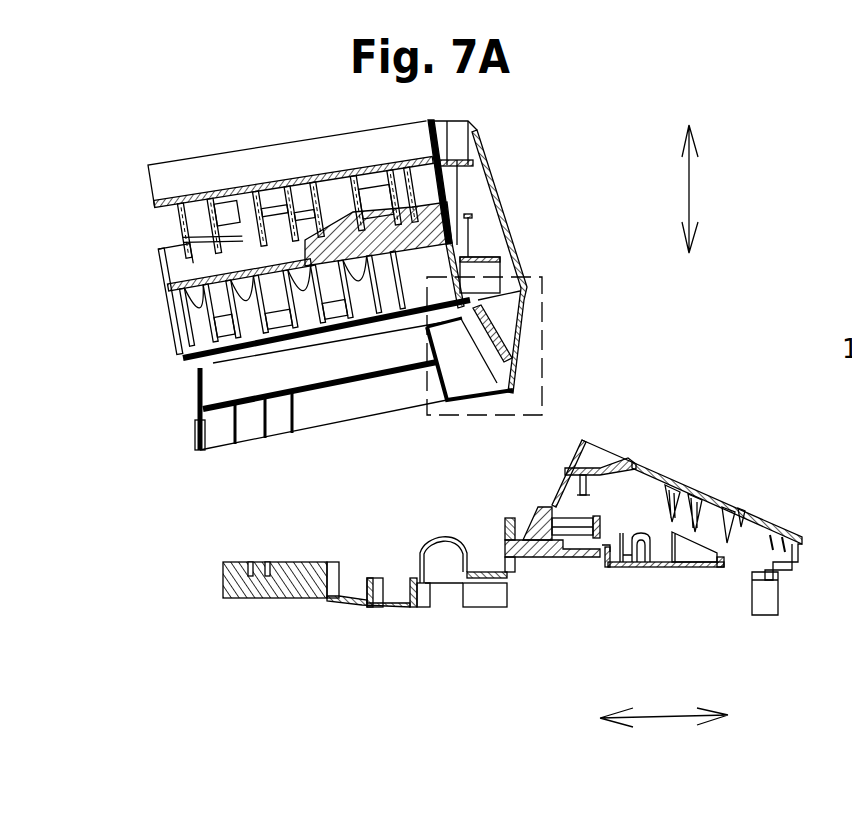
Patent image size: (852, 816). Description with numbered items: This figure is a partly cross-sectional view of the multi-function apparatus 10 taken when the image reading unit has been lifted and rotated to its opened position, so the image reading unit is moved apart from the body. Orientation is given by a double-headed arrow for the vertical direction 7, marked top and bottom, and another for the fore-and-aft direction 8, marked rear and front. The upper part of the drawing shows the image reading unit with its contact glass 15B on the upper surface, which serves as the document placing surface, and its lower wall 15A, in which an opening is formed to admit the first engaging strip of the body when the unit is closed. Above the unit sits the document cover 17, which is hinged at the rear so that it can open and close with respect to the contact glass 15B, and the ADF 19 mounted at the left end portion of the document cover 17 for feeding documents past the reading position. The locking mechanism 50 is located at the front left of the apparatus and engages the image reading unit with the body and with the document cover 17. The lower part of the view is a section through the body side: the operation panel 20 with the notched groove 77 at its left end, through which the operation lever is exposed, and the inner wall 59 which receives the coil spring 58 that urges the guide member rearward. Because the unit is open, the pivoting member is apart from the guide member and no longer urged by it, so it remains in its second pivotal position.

The ADF (Auto Document Feeder) 19 is at (275, 170).
The document cover 17 is at (517, 142).
The lower wall 15A is at (465, 400).
The contact glass 15B is at (200, 372).
The locking mechanism 50 is at (449, 342).
The vertical direction 7 is at (690, 188).
The fore-and-aft direction 8 is at (665, 720).
The multi-function apparatus 10 is at (250, 662).
The coil spring 58 is at (572, 534).
The inner wall 59 is at (598, 522).
The notched groove 77 is at (617, 442).
The operation panel 20 is at (713, 498).